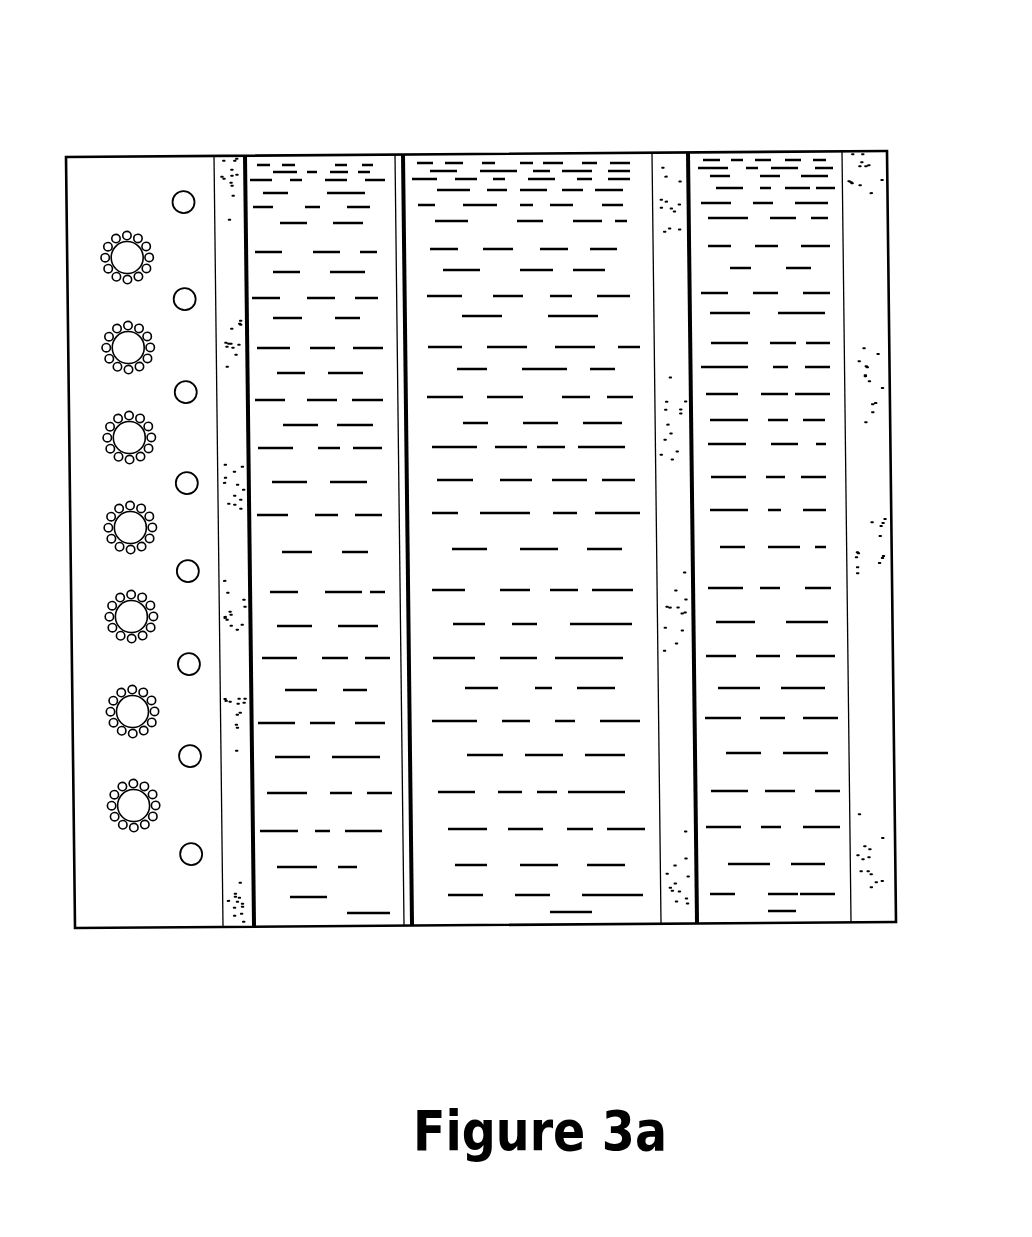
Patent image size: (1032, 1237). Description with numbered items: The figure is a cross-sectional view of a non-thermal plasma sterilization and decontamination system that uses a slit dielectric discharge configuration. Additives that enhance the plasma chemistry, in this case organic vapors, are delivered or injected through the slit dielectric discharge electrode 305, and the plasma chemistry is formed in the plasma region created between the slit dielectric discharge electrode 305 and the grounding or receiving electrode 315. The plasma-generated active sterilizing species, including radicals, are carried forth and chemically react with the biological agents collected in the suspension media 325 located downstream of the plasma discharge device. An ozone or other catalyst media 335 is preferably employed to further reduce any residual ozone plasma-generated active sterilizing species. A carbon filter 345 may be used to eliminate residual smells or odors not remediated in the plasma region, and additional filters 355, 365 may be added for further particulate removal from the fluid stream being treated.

The slit dielectric discharge electrode 305 is at (107, 214).
The grounding or receiving electrode 315 is at (180, 178).
The carbon filter 345 is at (232, 165).
The suspension media 325 is at (316, 228).
The additional filter 355 is at (508, 211).
The additional filter 365 is at (671, 160).
The ozone or other catalyst media 335 is at (766, 218).